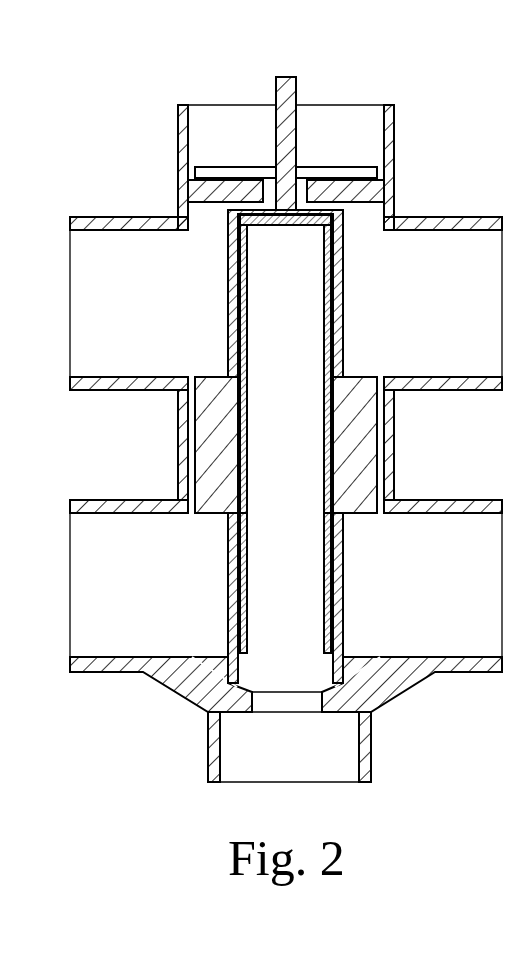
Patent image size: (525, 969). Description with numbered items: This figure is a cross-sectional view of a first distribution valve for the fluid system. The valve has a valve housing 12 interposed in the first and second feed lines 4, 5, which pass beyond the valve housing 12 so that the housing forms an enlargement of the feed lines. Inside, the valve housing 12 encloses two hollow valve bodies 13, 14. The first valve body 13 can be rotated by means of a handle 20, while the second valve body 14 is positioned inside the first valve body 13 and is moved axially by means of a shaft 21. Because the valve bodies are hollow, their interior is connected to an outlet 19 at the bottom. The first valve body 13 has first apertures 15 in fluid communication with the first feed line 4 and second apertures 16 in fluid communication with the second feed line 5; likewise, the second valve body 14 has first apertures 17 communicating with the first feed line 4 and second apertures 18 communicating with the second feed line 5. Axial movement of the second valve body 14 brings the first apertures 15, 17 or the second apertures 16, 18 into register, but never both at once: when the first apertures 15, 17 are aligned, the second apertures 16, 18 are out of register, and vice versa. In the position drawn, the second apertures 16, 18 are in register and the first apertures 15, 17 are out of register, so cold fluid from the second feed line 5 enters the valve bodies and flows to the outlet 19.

The first feed line 4 is at (100, 217).
The second feed line 5 is at (92, 500).
The valve housing 12 is at (178, 440).
The first valve body 13 is at (214, 515).
The second valve body 14 is at (243, 558).
The first apertures 15 is at (343, 305).
The second apertures 16 is at (347, 578).
The first apertures 17 is at (323, 273).
The second apertures 18 is at (326, 597).
The outlet 19 is at (373, 741).
The handle 20 is at (348, 167).
The shaft 21 is at (297, 88).